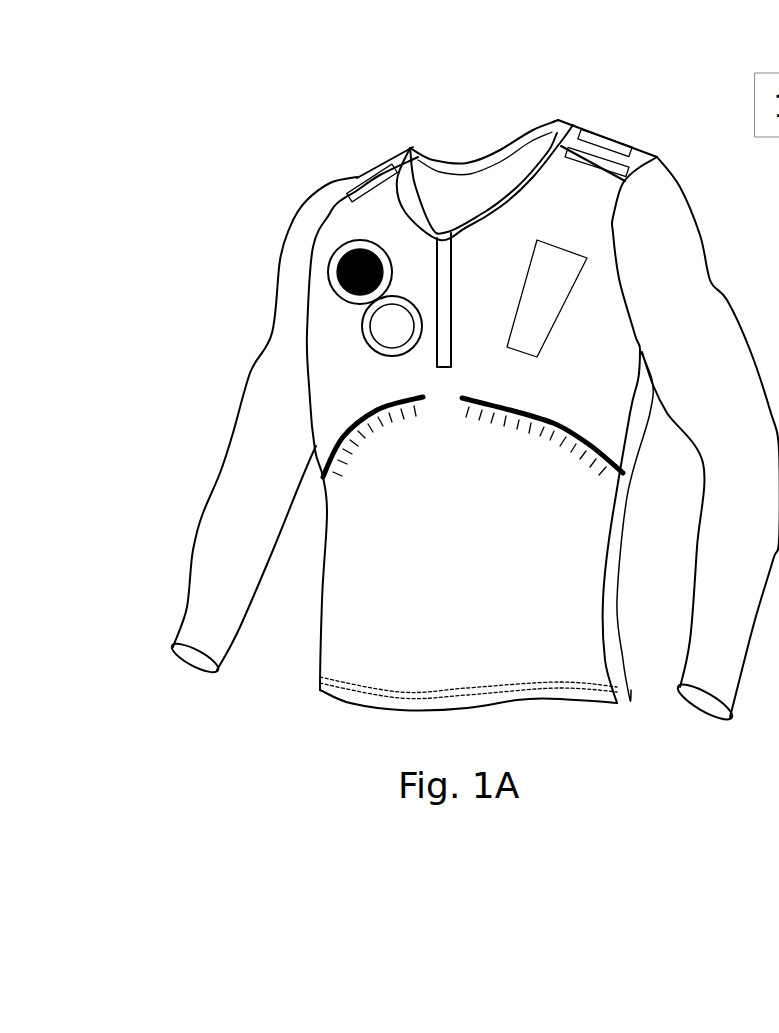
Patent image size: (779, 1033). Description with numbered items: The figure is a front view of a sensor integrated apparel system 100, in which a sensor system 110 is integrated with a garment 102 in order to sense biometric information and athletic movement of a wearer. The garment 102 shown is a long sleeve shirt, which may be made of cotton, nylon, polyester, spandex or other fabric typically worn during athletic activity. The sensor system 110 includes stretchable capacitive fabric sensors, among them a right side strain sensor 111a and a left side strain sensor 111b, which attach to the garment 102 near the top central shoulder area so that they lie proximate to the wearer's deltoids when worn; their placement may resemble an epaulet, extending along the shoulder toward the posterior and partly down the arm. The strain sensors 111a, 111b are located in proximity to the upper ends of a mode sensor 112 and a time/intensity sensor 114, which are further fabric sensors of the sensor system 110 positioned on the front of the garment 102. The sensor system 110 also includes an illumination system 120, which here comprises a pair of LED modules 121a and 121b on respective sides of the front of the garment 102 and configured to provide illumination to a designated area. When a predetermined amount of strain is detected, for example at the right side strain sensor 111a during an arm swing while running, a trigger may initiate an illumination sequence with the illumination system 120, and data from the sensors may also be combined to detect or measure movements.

The sensor integrated apparel system 100 is at (429, 368).
The garment 102 is at (190, 612).
The sensor system 110 is at (480, 106).
The right side strain sensor 111a is at (362, 182).
The left side strain sensor 111b is at (607, 158).
The mode sensor 112 is at (327, 272).
The time/intensity sensor 114 is at (553, 285).
The illumination system 120 is at (391, 433).
The LED module 121a is at (370, 468).
The LED module 121b is at (542, 474).